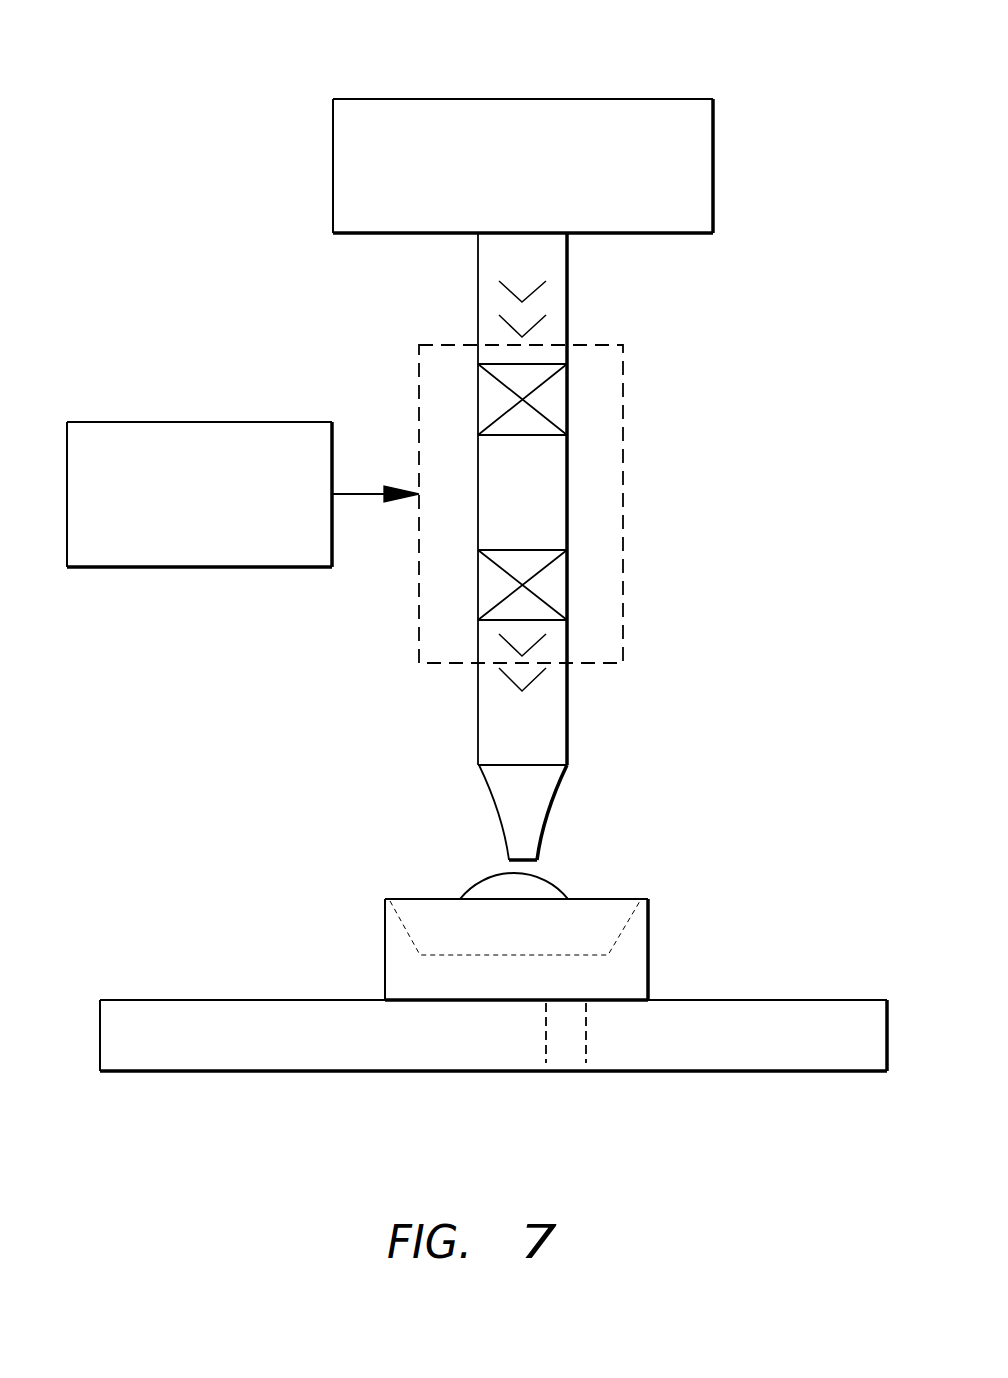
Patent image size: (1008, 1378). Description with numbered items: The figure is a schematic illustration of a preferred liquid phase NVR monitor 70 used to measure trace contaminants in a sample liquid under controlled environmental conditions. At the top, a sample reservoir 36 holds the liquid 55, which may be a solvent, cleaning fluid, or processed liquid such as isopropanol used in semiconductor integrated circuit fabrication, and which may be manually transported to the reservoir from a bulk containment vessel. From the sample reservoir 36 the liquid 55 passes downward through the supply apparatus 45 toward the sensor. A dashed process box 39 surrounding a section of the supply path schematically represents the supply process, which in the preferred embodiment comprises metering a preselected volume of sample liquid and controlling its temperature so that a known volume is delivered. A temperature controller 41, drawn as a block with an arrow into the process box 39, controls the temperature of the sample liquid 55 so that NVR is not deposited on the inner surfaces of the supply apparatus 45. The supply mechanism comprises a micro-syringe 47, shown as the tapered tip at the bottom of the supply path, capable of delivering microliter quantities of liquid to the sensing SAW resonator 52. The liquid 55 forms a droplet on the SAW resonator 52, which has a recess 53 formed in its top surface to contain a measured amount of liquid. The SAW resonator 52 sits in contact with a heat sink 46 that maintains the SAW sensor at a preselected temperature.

The liquid phase NVR monitor 70 is at (594, 56).
The sample reservoir 36 is at (685, 168).
The process box 39 is at (623, 345).
The temperature controller 41 is at (223, 568).
The supply apparatus 45 is at (568, 717).
The micro-syringe 47 is at (502, 827).
The liquid 55 is at (540, 873).
The recess 53 is at (627, 922).
The sensing SAW resonator 52 is at (648, 963).
The heat sink 46 is at (210, 1013).